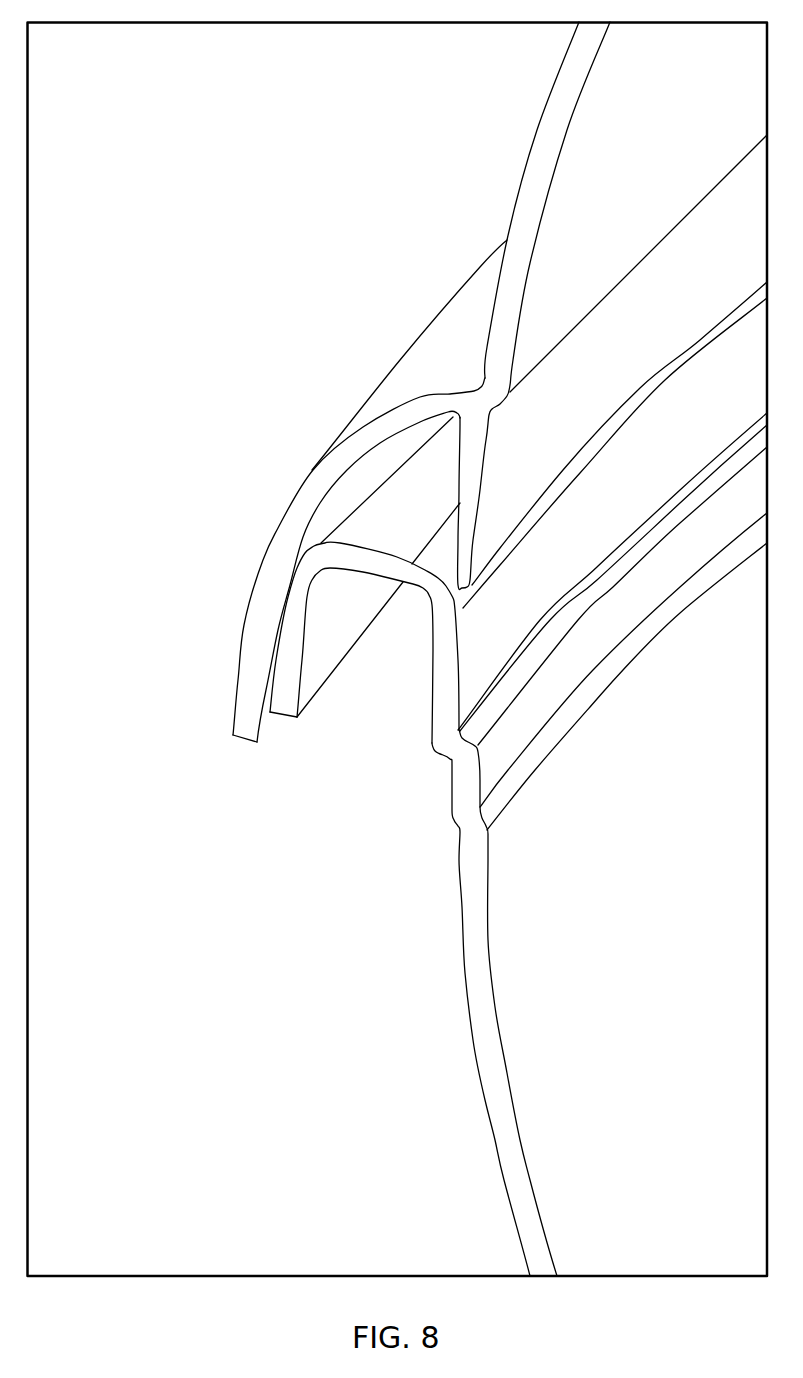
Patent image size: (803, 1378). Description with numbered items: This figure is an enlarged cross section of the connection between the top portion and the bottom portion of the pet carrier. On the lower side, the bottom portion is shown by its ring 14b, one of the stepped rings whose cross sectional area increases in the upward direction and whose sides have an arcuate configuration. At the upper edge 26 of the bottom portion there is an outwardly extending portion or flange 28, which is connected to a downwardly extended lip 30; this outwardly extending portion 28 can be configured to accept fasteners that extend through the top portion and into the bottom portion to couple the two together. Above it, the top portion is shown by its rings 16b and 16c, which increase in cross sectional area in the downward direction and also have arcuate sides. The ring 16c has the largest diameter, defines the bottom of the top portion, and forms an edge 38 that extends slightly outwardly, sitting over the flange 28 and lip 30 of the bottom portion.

The ring 16b is at (527, 159).
The ring 16c is at (240, 625).
The edge 38 is at (232, 738).
The downwardly extended lip 30 is at (283, 720).
The upper edge 26 is at (407, 583).
The outwardly extending portion 28 is at (347, 572).
The ring 14b is at (465, 973).